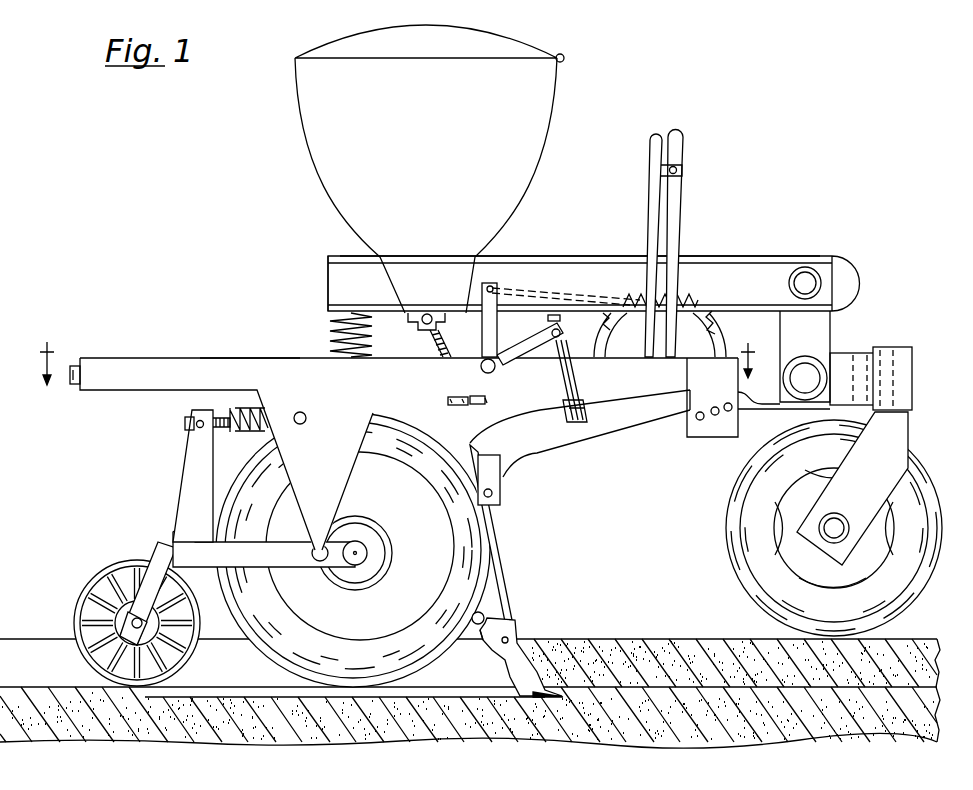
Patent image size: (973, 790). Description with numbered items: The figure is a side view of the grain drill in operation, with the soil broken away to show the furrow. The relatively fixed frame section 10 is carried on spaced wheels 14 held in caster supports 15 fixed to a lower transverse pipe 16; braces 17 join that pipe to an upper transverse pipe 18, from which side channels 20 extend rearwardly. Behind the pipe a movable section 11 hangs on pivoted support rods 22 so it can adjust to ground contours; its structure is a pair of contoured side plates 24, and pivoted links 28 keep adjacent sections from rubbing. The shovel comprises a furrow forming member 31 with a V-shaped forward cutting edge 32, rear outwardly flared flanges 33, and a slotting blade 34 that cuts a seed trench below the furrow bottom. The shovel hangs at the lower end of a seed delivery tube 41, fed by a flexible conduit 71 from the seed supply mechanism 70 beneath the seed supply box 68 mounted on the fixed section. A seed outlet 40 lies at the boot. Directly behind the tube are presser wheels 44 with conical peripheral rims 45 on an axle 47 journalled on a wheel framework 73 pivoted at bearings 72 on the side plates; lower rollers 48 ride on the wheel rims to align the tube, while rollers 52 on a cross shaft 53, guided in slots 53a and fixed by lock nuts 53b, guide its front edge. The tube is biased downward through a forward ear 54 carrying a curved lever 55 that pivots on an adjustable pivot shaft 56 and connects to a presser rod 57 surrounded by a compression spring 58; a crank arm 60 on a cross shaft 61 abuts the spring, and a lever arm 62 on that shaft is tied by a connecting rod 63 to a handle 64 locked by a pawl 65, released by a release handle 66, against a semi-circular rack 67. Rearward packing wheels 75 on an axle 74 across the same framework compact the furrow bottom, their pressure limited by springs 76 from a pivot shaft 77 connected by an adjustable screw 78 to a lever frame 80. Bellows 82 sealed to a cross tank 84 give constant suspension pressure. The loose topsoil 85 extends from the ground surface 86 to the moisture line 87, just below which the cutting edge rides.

The vertically positioned frame section 10 is at (769, 254).
The movable section 11 is at (258, 350).
The wheels 14 is at (915, 478).
The caster supports 15 is at (898, 351).
The lower transverse pipe 16 is at (826, 388).
The braces 17 is at (819, 344).
The upper transverse pipe 18 is at (807, 267).
The side channels 20 is at (772, 296).
The pivoted support rods 22 is at (760, 406).
The side plates 24 is at (328, 389).
The pivoted links 28 is at (76, 383).
The furrow forming member 31 is at (522, 648).
The forward cutting edge 32 is at (531, 688).
The rear outwardly flared flanges 33 is at (481, 645).
The slotting blade 34 is at (545, 713).
The seed outlet 40 is at (496, 634).
The seed delivery tube 41 is at (497, 581).
The presser wheels 44 is at (363, 623).
The conical peripheral rims 45 is at (234, 600).
The axle 47 is at (370, 553).
The lower rollers 48 is at (492, 617).
The rollers 52 is at (481, 403).
The cross shaft 53 is at (470, 397).
The slots 53a is at (455, 398).
The lock nuts 53b is at (458, 414).
The forward ear 54 is at (483, 472).
The curved lever 55 is at (531, 455).
The pivot shaft 56 is at (715, 415).
The presser rod 57 is at (585, 406).
The compression spring 58 is at (567, 416).
The crank arm 60 is at (534, 344).
The cross shaft 61 is at (495, 370).
The lever arm 62 is at (484, 334).
The connecting rod 63 is at (548, 298).
The handle 64 is at (674, 238).
The pawl 65 is at (662, 290).
The release handle 66 is at (652, 145).
The semi-circular rack 67 is at (715, 342).
The seed supply box 68 is at (421, 196).
The seed supply mechanism 70 is at (419, 333).
The conduits 71 is at (447, 346).
The bearings 72 is at (318, 562).
The wheel framework 73 is at (176, 557).
The axle 74 is at (136, 622).
The packing wheels 75 is at (78, 616).
The springs 76 is at (249, 412).
The pivot shaft 77 is at (307, 417).
The adjustable screw 78 is at (222, 432).
The lever frame 80 is at (197, 465).
The bellows 82 is at (330, 329).
The cross tank 84 is at (327, 286).
The loose topsoil 85 is at (662, 660).
The ground surface 86 is at (601, 639).
The moisture line 87 is at (702, 685).